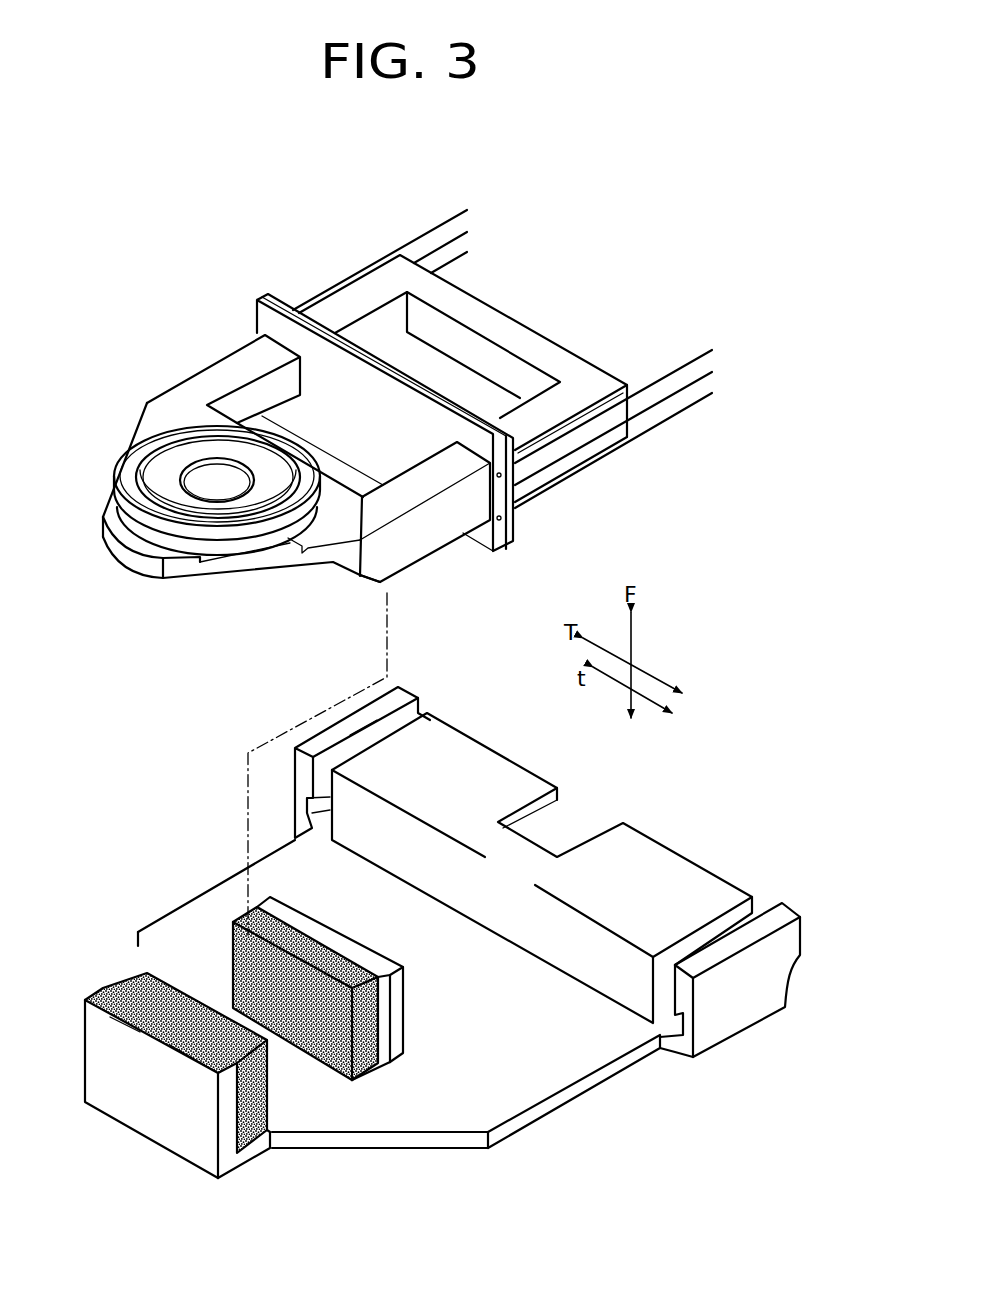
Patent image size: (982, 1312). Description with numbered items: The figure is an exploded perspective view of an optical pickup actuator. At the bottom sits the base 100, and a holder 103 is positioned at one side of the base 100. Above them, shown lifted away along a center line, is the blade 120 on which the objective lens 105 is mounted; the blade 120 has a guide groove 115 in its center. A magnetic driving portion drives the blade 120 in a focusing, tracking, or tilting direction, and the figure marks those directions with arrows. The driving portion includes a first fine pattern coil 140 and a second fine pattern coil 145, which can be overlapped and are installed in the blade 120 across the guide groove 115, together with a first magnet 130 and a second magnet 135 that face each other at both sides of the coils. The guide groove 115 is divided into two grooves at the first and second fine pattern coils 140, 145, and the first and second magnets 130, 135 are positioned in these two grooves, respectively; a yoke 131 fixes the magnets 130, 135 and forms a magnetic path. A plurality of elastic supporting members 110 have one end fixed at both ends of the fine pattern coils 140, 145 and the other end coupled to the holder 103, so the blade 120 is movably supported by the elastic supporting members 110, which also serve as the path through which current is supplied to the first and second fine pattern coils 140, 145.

The base 100 is at (503, 1088).
The holder 103 is at (683, 867).
The objective lens 105 is at (193, 473).
The elastic supporting members 110 is at (672, 372).
The guide groove 115 is at (268, 428).
The blade 120 is at (177, 398).
The first magnet 130 is at (137, 990).
The yoke 131 is at (288, 907).
The second magnet 135 is at (241, 922).
The first fine pattern coil 140 is at (285, 325).
The second fine pattern coil 145 is at (322, 302).